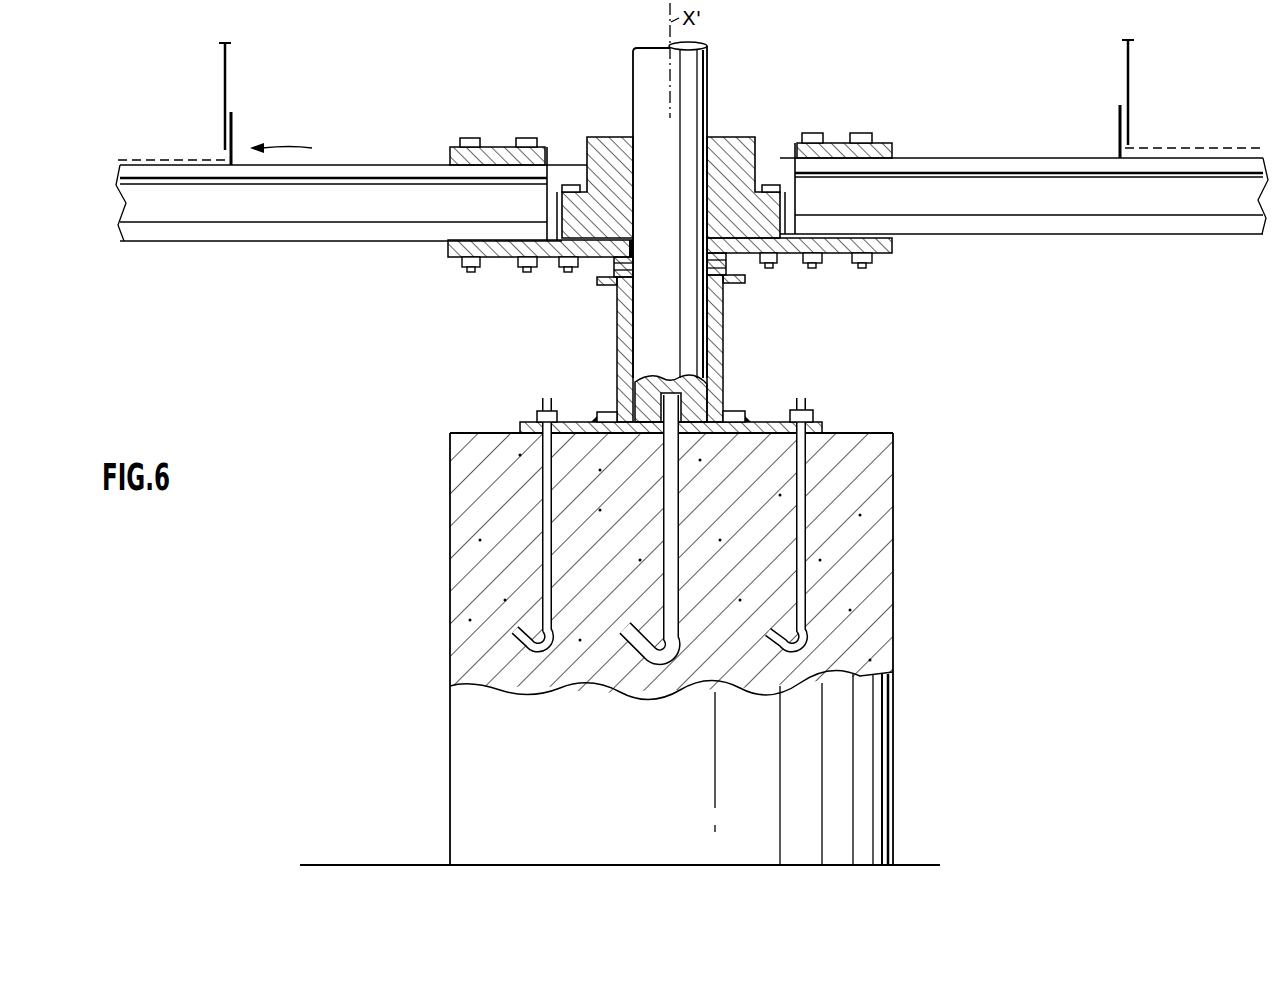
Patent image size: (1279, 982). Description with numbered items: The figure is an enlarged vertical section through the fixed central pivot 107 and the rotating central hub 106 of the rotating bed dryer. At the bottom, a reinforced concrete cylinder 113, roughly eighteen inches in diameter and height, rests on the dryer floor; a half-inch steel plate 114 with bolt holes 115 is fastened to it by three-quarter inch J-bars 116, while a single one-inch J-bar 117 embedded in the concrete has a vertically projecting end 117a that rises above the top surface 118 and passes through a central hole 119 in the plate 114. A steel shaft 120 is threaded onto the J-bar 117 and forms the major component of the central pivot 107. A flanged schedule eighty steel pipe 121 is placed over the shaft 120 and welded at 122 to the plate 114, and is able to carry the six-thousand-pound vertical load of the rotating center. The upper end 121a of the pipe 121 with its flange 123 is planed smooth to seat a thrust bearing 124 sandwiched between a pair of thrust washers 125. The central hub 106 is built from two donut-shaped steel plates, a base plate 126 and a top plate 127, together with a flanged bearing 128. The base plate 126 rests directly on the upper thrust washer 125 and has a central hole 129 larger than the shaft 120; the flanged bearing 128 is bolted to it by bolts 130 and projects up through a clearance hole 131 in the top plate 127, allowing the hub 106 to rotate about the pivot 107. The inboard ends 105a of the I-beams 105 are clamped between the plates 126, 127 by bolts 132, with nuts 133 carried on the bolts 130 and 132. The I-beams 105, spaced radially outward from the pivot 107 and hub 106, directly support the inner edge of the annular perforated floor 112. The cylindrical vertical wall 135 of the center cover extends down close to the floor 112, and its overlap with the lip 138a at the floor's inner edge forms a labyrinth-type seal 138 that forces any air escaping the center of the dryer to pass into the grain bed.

The I-beams 105 is at (221, 213).
The inboard ends of the I-beams 105a is at (812, 203).
The central hub 106 is at (710, 96).
The central pivot 107 is at (732, 368).
The annular perforated floor 112 is at (178, 160).
The reinforced concrete cylinder 113 is at (864, 490).
The steel plate 114 is at (821, 424).
The bolt holes 115 is at (541, 409).
The J-bars 116 is at (541, 511).
The J-bar 117 is at (676, 622).
The vertically projecting end 117a is at (668, 379).
The top surface 118 is at (870, 431).
The central hole 119 is at (681, 412).
The steel shaft 120 is at (670, 181).
The flanged steel pipe 121 is at (617, 335).
The upper end of the steel pipe 121a is at (720, 305).
The weld 122 is at (617, 411).
The flange 123 is at (745, 285).
The thrust bearing 124 is at (608, 268).
The thrust washers 125 is at (637, 260).
The base plate of the hub 126 is at (889, 253).
The top plate of the hub 127 is at (882, 148).
The flanged bearing 128 is at (612, 204).
The central hole 129 is at (637, 256).
The bolts 130 is at (567, 186).
The central hole 131 is at (548, 145).
The bolts 132 is at (520, 137).
The nuts 133 is at (870, 266).
The cylindrical vertical wall 135 is at (227, 64).
The labyrinth-type seal 138 is at (297, 145).
The overlapping lip 138a is at (233, 137).